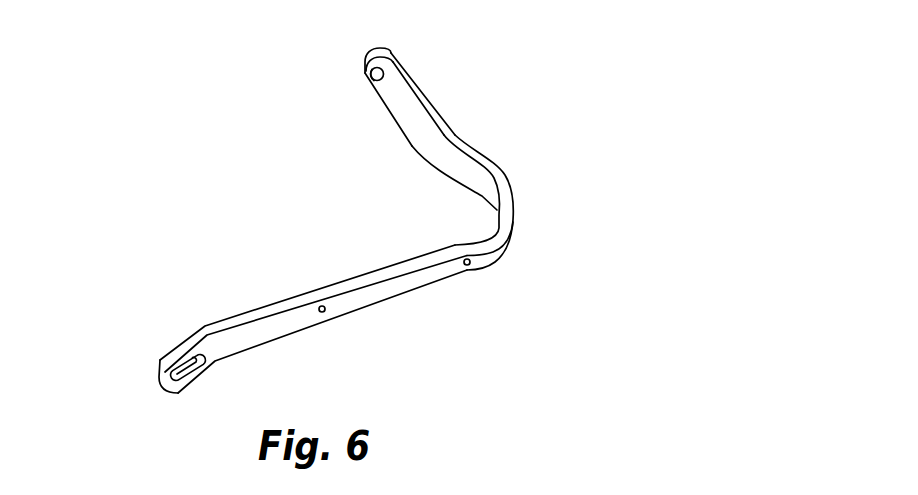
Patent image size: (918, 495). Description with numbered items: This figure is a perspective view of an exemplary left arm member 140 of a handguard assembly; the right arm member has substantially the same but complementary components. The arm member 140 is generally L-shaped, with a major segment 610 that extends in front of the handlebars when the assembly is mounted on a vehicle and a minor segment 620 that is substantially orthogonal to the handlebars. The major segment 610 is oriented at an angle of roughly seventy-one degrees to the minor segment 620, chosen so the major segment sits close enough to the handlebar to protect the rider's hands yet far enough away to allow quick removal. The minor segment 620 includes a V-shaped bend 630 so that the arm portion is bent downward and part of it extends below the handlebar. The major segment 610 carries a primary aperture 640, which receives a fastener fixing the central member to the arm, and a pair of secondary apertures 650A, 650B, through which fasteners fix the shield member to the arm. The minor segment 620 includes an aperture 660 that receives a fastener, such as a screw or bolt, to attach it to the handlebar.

The arm member 140 is at (158, 167).
The major segment 610 is at (354, 335).
The minor segment 620 is at (378, 97).
The V-shaped bend 630 is at (455, 142).
The primary aperture 640 is at (190, 367).
The secondary aperture 650A is at (325, 312).
The secondary aperture 650B is at (470, 265).
The aperture 660 is at (370, 76).